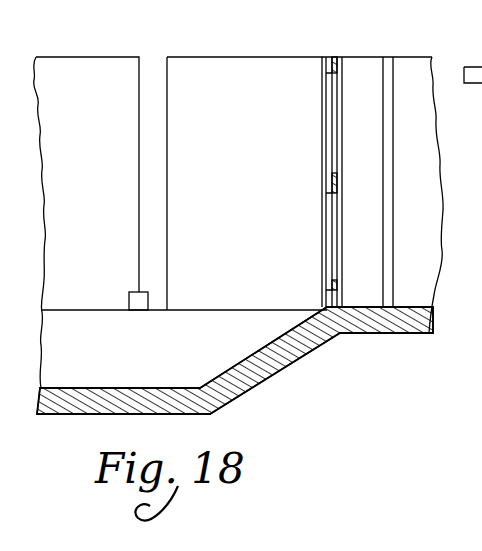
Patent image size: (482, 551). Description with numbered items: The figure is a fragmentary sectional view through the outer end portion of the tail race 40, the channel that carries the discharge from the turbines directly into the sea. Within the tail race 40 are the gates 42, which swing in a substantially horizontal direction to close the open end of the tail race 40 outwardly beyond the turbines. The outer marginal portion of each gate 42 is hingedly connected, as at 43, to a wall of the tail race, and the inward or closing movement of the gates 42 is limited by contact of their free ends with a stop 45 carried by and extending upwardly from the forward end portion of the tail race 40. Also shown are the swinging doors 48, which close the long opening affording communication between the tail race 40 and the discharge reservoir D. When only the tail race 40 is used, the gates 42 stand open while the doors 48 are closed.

The tail race 40 is at (90, 357).
The gates 42 is at (78, 77).
The hinge connection 43 is at (335, 56).
The stop 45 is at (148, 297).
The swinging doors 48 is at (390, 63).
The discharge reservoir D is at (418, 213).